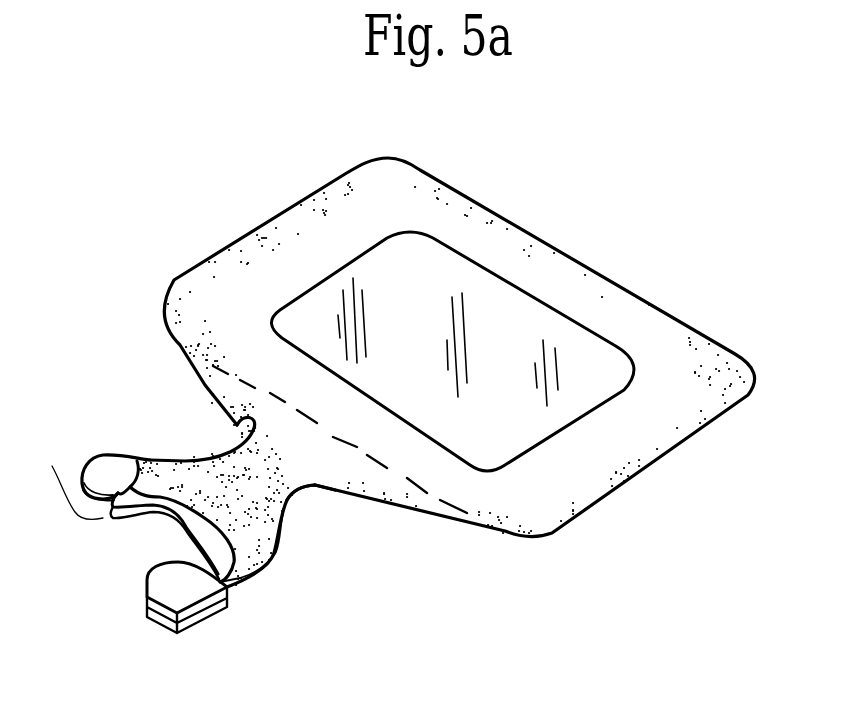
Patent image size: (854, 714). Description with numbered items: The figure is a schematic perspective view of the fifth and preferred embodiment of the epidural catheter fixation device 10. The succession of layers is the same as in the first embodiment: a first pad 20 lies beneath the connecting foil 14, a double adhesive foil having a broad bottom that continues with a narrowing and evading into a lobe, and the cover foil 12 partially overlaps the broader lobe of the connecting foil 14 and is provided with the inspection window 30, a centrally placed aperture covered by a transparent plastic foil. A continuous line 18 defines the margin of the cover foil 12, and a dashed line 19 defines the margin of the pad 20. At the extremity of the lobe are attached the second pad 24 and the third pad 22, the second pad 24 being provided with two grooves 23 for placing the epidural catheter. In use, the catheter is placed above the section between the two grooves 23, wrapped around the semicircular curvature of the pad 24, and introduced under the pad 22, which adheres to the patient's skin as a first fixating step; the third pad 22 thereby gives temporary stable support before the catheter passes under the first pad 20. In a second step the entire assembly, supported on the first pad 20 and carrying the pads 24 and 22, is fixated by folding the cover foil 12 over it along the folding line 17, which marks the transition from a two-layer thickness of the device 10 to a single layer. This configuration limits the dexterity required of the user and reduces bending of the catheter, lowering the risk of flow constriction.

The epidural catheter fixation device 10 is at (595, 236).
The cover foil 12 is at (677, 343).
The connecting foil 14 is at (243, 578).
The folding line 17 is at (212, 368).
The continuous line 18 is at (233, 413).
The dashed line 19 is at (283, 490).
The first pad 20 is at (273, 557).
The third pad 22 is at (173, 600).
The grooves 23 is at (140, 463).
The second pad 24 is at (193, 512).
The inspection window 30 is at (465, 280).